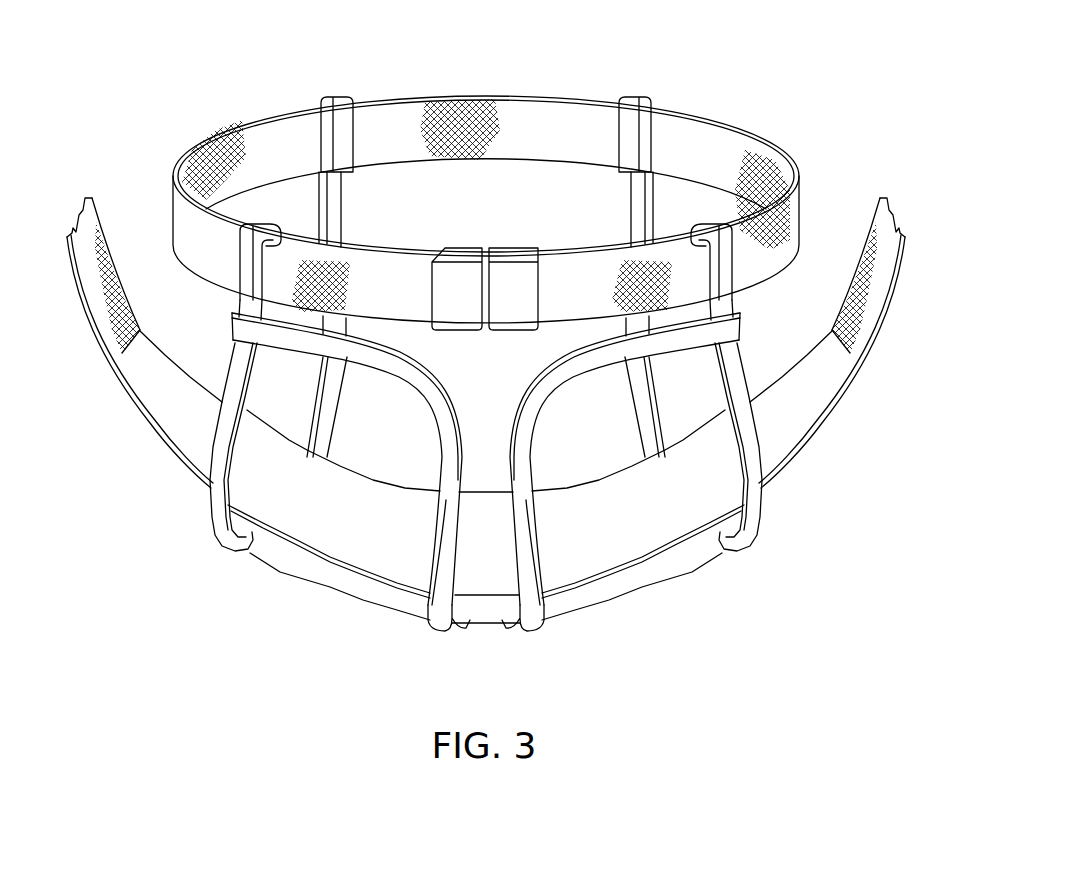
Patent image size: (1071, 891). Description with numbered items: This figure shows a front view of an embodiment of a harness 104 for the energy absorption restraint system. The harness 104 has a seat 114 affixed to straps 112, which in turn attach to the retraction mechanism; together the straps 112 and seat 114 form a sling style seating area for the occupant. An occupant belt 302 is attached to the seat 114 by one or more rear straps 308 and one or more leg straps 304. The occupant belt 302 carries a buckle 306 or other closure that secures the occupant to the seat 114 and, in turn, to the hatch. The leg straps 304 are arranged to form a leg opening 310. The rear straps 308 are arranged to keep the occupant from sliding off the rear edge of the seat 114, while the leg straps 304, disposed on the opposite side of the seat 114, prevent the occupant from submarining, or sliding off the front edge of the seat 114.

The harness 104 is at (429, 62).
The occupant belt 302 is at (536, 96).
The buckle 306 is at (507, 250).
The rear straps 308 is at (343, 215).
The leg opening 310 is at (274, 371).
The leg straps 304 is at (233, 550).
The seat 114 is at (376, 487).
The straps 112 is at (105, 353).